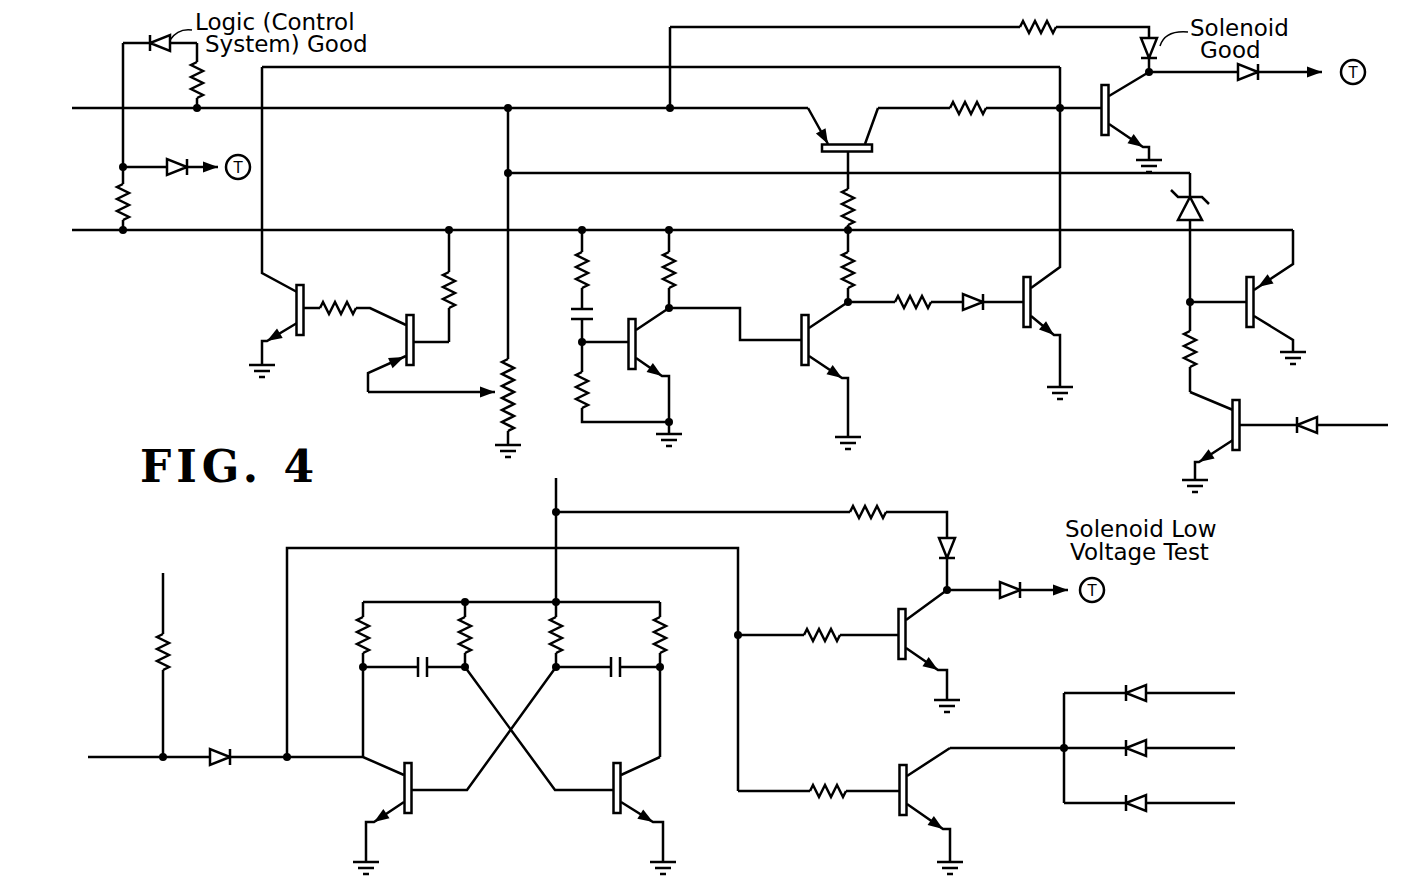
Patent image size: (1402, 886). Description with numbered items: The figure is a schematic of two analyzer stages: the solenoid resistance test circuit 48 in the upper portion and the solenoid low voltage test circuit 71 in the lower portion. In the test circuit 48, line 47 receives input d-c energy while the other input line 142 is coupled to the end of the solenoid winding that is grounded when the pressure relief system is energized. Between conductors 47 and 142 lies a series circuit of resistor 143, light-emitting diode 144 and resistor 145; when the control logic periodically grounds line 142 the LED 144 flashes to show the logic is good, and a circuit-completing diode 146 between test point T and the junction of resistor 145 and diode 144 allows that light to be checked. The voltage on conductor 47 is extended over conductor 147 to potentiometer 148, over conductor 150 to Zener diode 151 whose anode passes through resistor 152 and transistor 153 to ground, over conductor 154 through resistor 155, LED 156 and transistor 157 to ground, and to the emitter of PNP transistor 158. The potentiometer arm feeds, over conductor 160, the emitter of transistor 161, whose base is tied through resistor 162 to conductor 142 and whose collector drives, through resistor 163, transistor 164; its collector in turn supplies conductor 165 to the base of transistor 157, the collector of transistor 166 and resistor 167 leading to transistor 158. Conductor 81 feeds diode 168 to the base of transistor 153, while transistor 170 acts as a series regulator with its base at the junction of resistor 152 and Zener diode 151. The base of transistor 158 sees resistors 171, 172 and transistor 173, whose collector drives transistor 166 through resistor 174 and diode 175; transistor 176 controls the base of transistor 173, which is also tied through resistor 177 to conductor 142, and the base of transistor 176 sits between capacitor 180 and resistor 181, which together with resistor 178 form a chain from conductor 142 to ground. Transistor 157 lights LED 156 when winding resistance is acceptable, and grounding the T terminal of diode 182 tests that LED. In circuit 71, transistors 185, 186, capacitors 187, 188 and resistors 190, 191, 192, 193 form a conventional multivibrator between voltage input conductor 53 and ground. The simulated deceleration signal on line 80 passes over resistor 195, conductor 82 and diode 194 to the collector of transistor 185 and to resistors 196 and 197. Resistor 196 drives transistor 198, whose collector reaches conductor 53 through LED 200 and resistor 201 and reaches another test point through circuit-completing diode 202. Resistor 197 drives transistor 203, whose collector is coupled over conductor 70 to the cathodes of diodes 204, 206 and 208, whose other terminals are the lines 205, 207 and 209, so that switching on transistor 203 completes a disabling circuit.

The line 47 is at (96, 107).
The solenoid resistance test circuit 48 is at (402, 189).
The voltage input conductor 53 is at (560, 492).
The conductor 70 is at (1032, 746).
The solenoid low voltage test circuit 71 is at (678, 586).
The line 80 is at (163, 592).
The conductor 81 is at (1362, 430).
The conductor 82 is at (185, 762).
The input line 142 is at (100, 233).
The resistor 143 is at (195, 76).
The light-emitting diode 144 is at (160, 35).
The resistor 145 is at (147, 138).
The circuit-completing diode 146 is at (186, 155).
The conductor 147 is at (507, 318).
The potentiometer 148 is at (529, 408).
The conductor 150 is at (849, 160).
The Zener diode 151 is at (1203, 198).
The resistor 152 is at (1169, 345).
The NPN type transistor 153 is at (1236, 442).
The conductor 154 is at (670, 50).
The resistor 155 is at (1035, 42).
The light-emitting diode 156 is at (1143, 48).
The NPN type transistor 157 is at (1134, 122).
The PNP type transistor 158 is at (879, 123).
The conductor 160 is at (443, 398).
The PNP type transistor 161 is at (403, 353).
The resistor 162 is at (472, 284).
The resistor 163 is at (363, 303).
The NPN type transistor 164 is at (284, 222).
The conductor 165 is at (386, 68).
The transistor 166 is at (1053, 233).
The resistor 167 is at (1025, 97).
The diode 168 is at (1309, 412).
The PNP type transistor 170 is at (1252, 297).
The resistor 171 is at (827, 190).
The resistor 172 is at (827, 266).
The NPN type transistor 173 is at (833, 375).
The resistor 174 is at (935, 292).
The diode 175 is at (977, 289).
The NPN type transistor 176 is at (659, 365).
The resistor 177 is at (732, 283).
The resistor 178 is at (560, 267).
The capacitor 180 is at (577, 325).
The resistor 181 is at (629, 394).
The diode 182 is at (1257, 85).
The NPN type transistor 185 is at (421, 770).
The NPN type transistor 186 is at (571, 770).
The capacitor 187 is at (414, 681).
The capacitor 188 is at (608, 681).
The resistor 190 is at (486, 679).
The resistor 191 is at (444, 634).
The resistor 192 is at (580, 634).
The resistor 193 is at (684, 679).
The diode 194 is at (245, 742).
The resistor 195 is at (187, 697).
The resistor 196 is at (816, 623).
The resistor 197 is at (818, 778).
The NPN type transistor 198 is at (930, 651).
The light-emitting diode 200 is at (1058, 522).
The resistor 201 is at (751, 512).
The circuit-completing diode 202 is at (1025, 604).
The NPN type transistor 203 is at (932, 811).
The diode 204 is at (1110, 732).
The output conductor 205 is at (1212, 692).
The diode 206 is at (1112, 736).
The output conductor 207 is at (1205, 747).
The diode 208 is at (1112, 791).
The output conductor 209 is at (1223, 787).